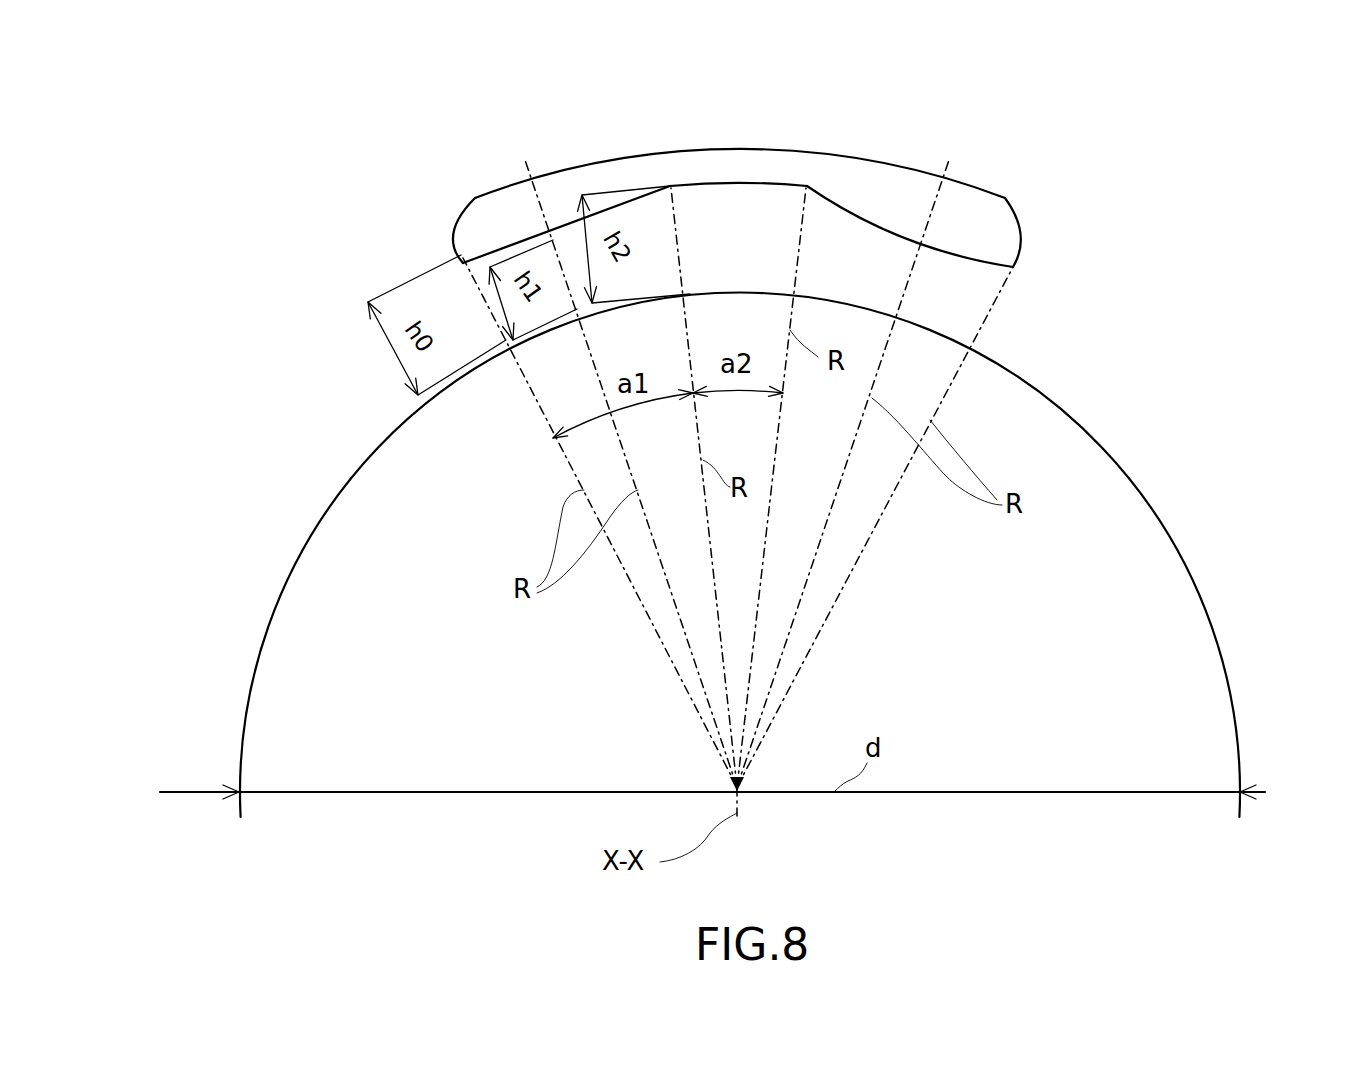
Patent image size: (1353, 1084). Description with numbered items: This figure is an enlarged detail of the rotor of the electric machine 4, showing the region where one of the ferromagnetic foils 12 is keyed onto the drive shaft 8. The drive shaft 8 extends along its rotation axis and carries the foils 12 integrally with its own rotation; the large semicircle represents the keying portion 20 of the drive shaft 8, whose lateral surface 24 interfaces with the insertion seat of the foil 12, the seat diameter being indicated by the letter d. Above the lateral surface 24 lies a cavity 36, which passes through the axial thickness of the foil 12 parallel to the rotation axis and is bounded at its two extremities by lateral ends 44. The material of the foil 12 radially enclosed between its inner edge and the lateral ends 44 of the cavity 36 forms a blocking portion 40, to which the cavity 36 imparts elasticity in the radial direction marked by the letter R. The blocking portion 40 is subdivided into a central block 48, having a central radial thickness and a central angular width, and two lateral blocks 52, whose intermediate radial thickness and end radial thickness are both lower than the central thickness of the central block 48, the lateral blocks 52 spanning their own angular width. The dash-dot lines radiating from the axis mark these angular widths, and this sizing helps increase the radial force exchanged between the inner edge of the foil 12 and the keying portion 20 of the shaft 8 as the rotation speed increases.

The electric machine 4 is at (257, 195).
The drive shaft 8 is at (1023, 727).
The foils 12 is at (302, 453).
The keying portion 20 is at (661, 555).
The lateral surface 24 is at (334, 523).
The cavities 36 is at (735, 142).
The blocking portions 40 is at (859, 240).
The lateral ends 44 is at (465, 210).
The central block 48 is at (750, 230).
The lateral blocks 52 is at (657, 230).